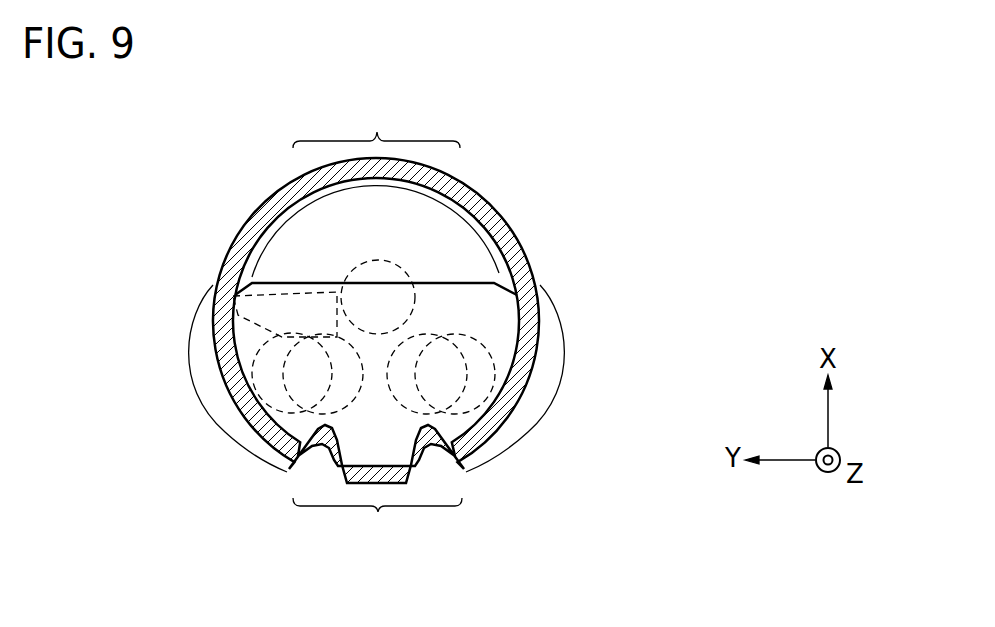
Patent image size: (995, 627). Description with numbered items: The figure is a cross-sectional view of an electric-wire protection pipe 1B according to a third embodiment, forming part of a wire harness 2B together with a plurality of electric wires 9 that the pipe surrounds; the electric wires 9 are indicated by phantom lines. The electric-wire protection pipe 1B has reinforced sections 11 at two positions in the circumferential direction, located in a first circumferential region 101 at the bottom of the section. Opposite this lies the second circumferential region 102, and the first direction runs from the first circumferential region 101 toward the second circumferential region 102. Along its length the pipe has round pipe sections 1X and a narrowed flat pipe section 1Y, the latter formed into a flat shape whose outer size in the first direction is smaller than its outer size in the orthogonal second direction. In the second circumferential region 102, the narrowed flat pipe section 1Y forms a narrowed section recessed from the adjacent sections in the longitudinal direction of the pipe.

The electric-wire protection pipe 1B is at (217, 225).
The round pipe section 1X is at (520, 248).
The narrowed flat pipe section 1Y is at (564, 340).
The wire harness 2B is at (645, 323).
The electric wire 9 is at (233, 296).
The reinforced section 11 is at (247, 427).
The first circumferential region 101 is at (377, 522).
The second circumferential region 102 is at (376, 123).